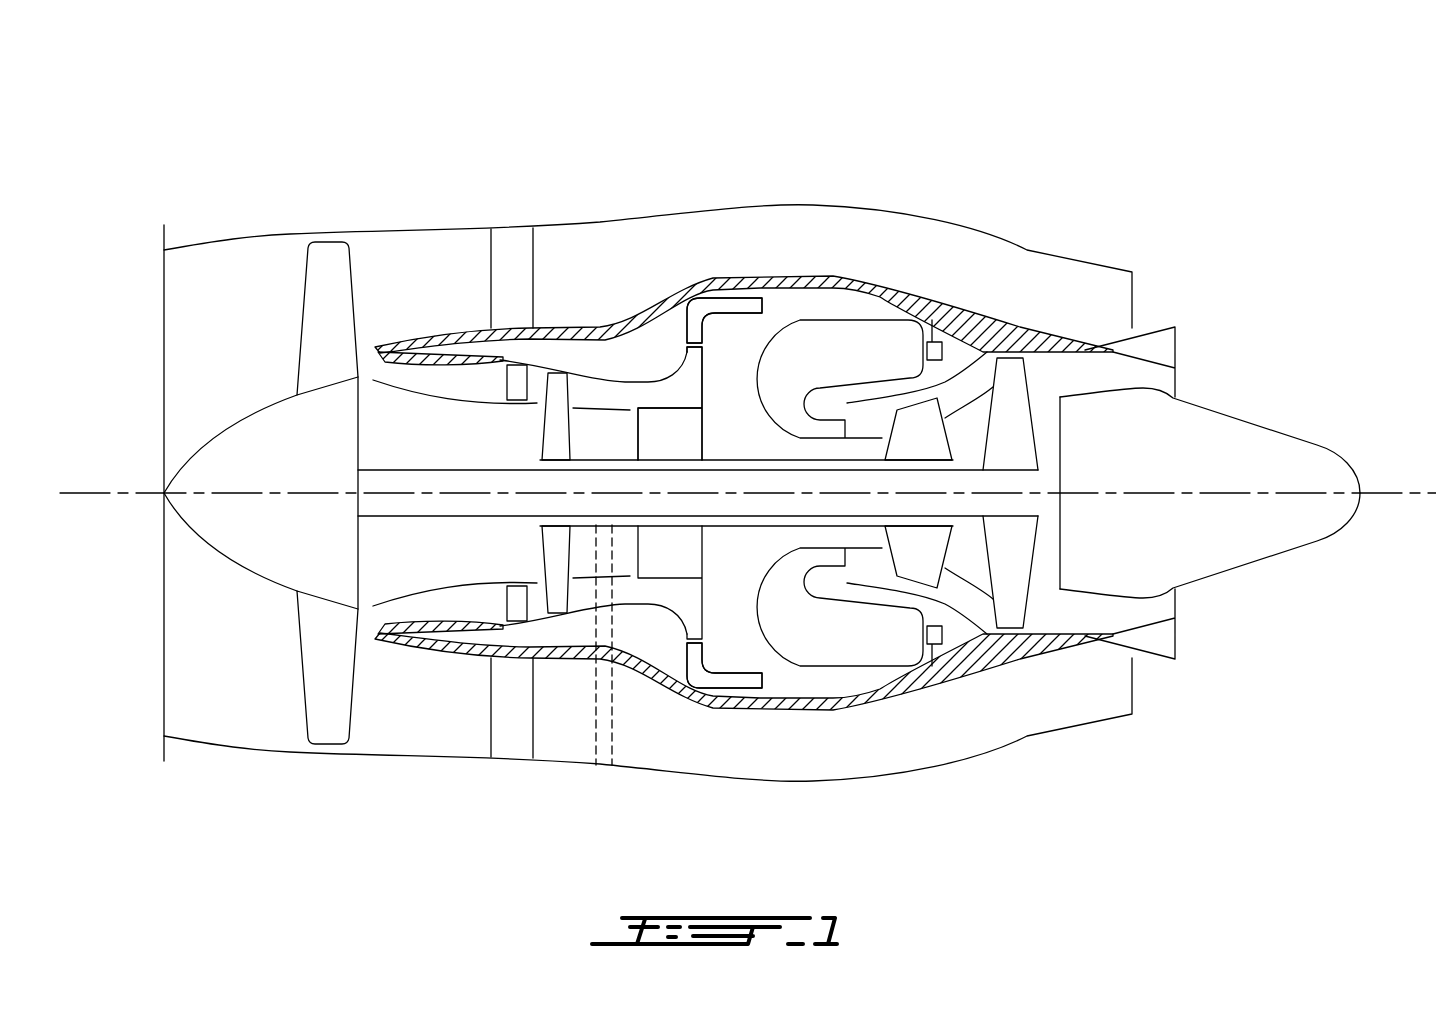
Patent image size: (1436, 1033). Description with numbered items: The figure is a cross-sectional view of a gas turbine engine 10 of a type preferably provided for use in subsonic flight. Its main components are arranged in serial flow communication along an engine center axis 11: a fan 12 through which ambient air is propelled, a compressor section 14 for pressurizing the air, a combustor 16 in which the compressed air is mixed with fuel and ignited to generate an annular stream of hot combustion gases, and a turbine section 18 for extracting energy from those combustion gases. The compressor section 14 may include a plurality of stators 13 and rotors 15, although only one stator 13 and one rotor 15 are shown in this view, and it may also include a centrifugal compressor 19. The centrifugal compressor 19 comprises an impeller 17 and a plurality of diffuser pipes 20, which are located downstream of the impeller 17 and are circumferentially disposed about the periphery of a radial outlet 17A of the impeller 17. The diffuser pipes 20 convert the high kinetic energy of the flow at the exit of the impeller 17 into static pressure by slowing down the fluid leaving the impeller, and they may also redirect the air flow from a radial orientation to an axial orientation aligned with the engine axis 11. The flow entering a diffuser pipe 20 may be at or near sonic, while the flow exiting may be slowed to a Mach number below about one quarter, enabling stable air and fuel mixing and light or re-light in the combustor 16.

The gas turbine engine 10 is at (997, 172).
The engine center axis 11 is at (1405, 493).
The fan 12 is at (315, 657).
The stator 13 is at (517, 365).
The compressor section 14 is at (620, 390).
The rotor 15 is at (557, 393).
The combustor 16 is at (812, 348).
The impeller 17 is at (670, 420).
The radial outlet 17A is at (673, 646).
The turbine section 18 is at (965, 563).
The centrifugal compressor 19 is at (715, 138).
The diffuser pipe 20 is at (732, 303).